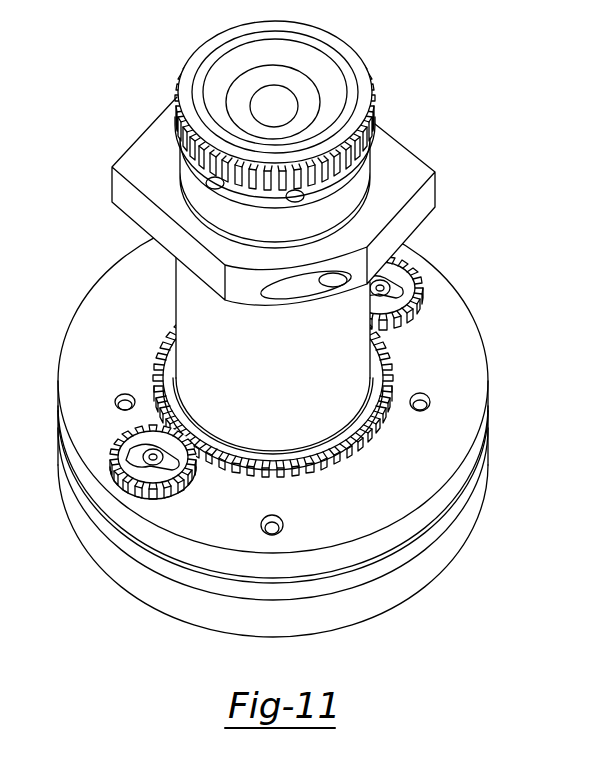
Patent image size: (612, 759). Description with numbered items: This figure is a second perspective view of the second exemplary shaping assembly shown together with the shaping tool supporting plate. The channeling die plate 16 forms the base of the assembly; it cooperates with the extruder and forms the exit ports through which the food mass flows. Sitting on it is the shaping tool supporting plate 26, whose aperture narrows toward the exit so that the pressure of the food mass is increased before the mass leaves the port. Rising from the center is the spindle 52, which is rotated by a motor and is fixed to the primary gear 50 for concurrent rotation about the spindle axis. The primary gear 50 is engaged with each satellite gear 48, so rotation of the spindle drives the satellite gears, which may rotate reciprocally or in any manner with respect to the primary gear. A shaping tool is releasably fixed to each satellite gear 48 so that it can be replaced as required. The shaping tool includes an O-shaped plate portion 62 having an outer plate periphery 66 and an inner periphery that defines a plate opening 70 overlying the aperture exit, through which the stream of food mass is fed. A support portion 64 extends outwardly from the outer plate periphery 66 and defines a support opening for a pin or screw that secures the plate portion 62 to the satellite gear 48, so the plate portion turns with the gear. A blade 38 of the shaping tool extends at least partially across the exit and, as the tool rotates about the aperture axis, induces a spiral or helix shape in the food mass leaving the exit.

The channeling die plate 16 is at (142, 592).
The shaping tool supporting plate 26 is at (413, 482).
The blade 38 is at (122, 455).
The satellite gear 48 is at (115, 470).
The primary gear 50 is at (400, 370).
The spindle 52 is at (196, 307).
The plate portion 62 is at (122, 456).
The support portion 64 is at (400, 278).
The outer plate periphery 66 is at (178, 487).
The plate opening 70 is at (156, 452).